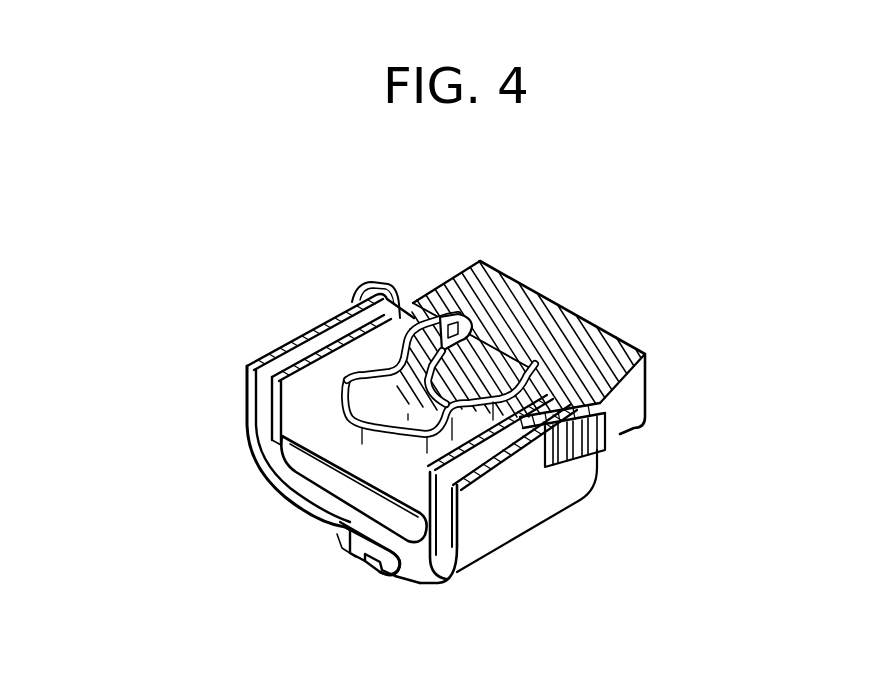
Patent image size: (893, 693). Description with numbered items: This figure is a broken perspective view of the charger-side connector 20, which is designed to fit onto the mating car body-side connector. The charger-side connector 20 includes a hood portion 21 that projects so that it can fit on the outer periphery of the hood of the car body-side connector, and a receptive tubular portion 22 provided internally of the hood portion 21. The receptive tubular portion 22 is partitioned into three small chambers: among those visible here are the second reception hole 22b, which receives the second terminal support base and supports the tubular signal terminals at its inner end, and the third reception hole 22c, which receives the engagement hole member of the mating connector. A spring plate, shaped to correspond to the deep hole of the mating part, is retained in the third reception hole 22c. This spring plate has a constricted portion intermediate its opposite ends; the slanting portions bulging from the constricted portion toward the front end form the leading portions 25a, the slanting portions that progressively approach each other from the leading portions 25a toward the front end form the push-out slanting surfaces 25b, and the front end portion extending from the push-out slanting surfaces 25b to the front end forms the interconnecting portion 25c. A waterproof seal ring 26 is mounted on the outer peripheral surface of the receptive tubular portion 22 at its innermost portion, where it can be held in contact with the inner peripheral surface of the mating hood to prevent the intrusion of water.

The charger-side connector 20 is at (263, 569).
The hood portion 21 is at (490, 535).
The receptive tubular portion 22 is at (380, 574).
The second reception hole 22b is at (292, 505).
The third reception hole 22c is at (313, 420).
The leading portion 25a is at (427, 288).
The push-out slanting surface 25b is at (337, 408).
The interconnecting portion 25c is at (340, 407).
The waterproof seal ring 26 is at (584, 420).